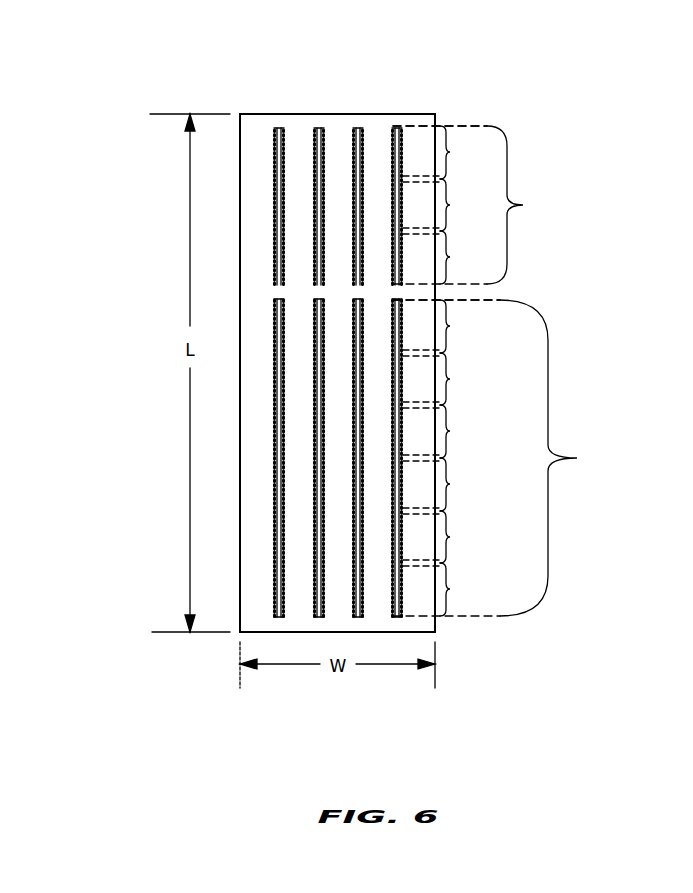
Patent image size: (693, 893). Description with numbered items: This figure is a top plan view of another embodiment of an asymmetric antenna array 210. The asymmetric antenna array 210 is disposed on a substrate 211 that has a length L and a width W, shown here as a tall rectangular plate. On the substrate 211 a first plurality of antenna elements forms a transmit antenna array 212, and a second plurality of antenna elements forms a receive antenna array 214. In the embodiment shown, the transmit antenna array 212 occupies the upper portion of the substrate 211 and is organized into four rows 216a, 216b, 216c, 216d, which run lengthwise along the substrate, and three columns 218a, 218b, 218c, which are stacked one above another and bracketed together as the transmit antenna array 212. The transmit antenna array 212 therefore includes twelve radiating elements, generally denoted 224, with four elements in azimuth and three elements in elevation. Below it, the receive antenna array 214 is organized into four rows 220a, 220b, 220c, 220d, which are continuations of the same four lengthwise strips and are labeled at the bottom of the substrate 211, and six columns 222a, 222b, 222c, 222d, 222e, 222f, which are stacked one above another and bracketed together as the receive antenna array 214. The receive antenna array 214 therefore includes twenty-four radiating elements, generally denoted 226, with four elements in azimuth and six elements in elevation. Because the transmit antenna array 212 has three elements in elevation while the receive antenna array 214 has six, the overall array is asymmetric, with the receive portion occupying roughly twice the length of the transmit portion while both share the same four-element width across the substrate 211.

The asymmetric antenna array 210 is at (126, 275).
The substrate 211 is at (255, 138).
The transmit antenna array 212 is at (526, 205).
The receive antenna array 214 is at (577, 458).
The row 216a is at (279, 128).
The row 216b is at (319, 128).
The row 216c is at (358, 128).
The row 216d is at (397, 128).
The column 218a is at (450, 152).
The column 218b is at (450, 205).
The column 218c is at (450, 257).
The row 220a is at (279, 632).
The row 220b is at (319, 632).
The row 220c is at (358, 632).
The row 220d is at (397, 632).
The column 222a is at (450, 326).
The column 222b is at (450, 379).
The column 222c is at (450, 431).
The column 222d is at (450, 484).
The column 222e is at (450, 537).
The column 222f is at (450, 589).
The radiating elements 224 is at (506, 96).
The radiating elements 226 is at (596, 376).